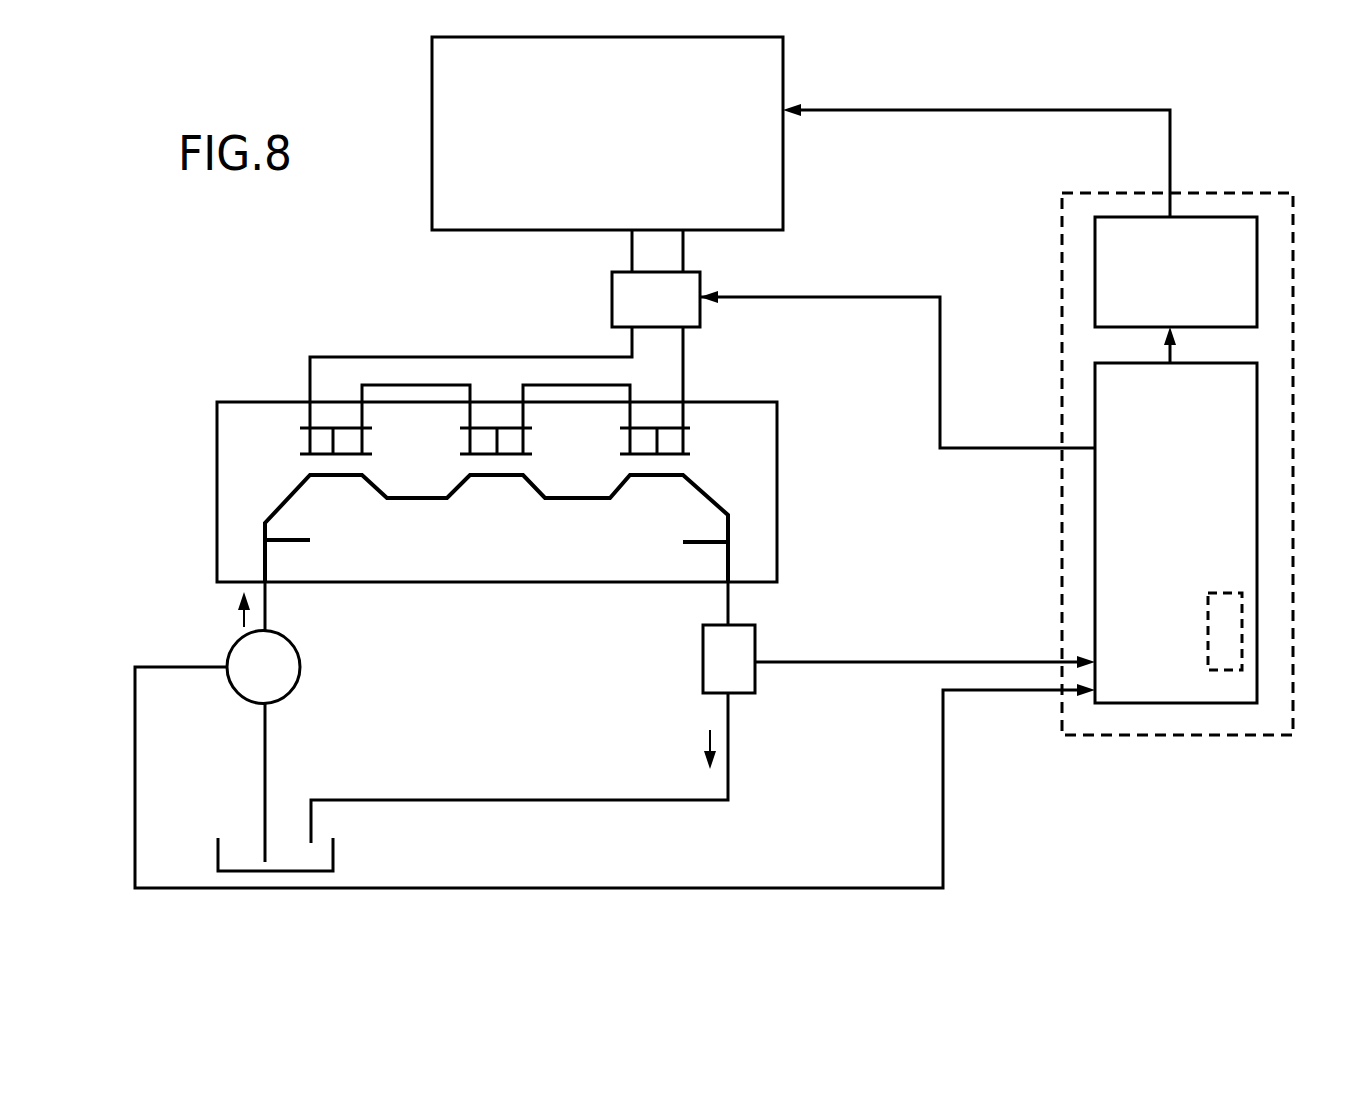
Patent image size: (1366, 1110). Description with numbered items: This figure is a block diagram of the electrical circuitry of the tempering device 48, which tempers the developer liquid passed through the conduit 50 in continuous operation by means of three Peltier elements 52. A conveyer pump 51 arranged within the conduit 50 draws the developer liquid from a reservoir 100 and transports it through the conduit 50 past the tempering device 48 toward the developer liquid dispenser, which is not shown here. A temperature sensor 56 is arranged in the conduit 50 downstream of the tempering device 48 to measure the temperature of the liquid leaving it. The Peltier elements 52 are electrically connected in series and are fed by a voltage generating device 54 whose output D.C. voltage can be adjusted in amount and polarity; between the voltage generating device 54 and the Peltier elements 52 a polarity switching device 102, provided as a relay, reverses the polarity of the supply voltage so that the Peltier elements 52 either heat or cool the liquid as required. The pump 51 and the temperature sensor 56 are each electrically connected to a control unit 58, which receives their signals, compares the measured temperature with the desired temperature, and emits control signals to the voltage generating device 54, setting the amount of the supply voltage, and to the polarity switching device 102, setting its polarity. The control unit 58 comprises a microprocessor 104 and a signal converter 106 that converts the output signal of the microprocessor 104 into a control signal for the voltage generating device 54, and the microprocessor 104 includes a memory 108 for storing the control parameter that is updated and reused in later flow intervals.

The tempering device 48 is at (545, 582).
The supply conduit 50 is at (267, 612).
The conveyer pump 51 is at (298, 680).
The Peltier elements 52 is at (325, 455).
The voltage generating device 54 is at (785, 59).
The temperature sensor 56 is at (703, 657).
The control unit 58 is at (1293, 360).
The reservoir 100 is at (335, 853).
The polarity switching device 102 is at (610, 283).
The microprocessor 104 is at (1257, 480).
The signal converter 106 is at (1257, 250).
The memory 108 is at (1245, 633).